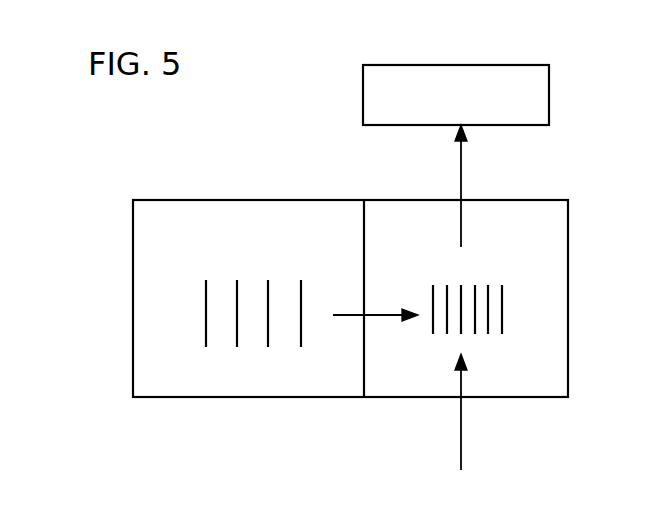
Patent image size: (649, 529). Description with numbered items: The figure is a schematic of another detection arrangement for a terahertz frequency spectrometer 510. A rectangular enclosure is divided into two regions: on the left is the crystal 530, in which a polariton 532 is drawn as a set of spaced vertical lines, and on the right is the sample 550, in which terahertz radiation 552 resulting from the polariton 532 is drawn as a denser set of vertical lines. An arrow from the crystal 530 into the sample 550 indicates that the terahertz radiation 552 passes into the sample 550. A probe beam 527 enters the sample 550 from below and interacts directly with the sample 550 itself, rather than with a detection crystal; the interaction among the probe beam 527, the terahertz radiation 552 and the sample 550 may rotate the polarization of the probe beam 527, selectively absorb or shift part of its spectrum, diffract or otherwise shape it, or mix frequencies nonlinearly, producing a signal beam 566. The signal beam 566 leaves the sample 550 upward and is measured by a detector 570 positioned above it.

The terahertz frequency spectrometer 510 is at (108, 270).
The crystal 530 is at (200, 256).
The polariton 532 is at (268, 278).
The sample 550 is at (432, 254).
The terahertz radiation 552 is at (478, 279).
The probe beam 527 is at (462, 440).
The signal beam 566 is at (461, 165).
The detector 570 is at (549, 93).